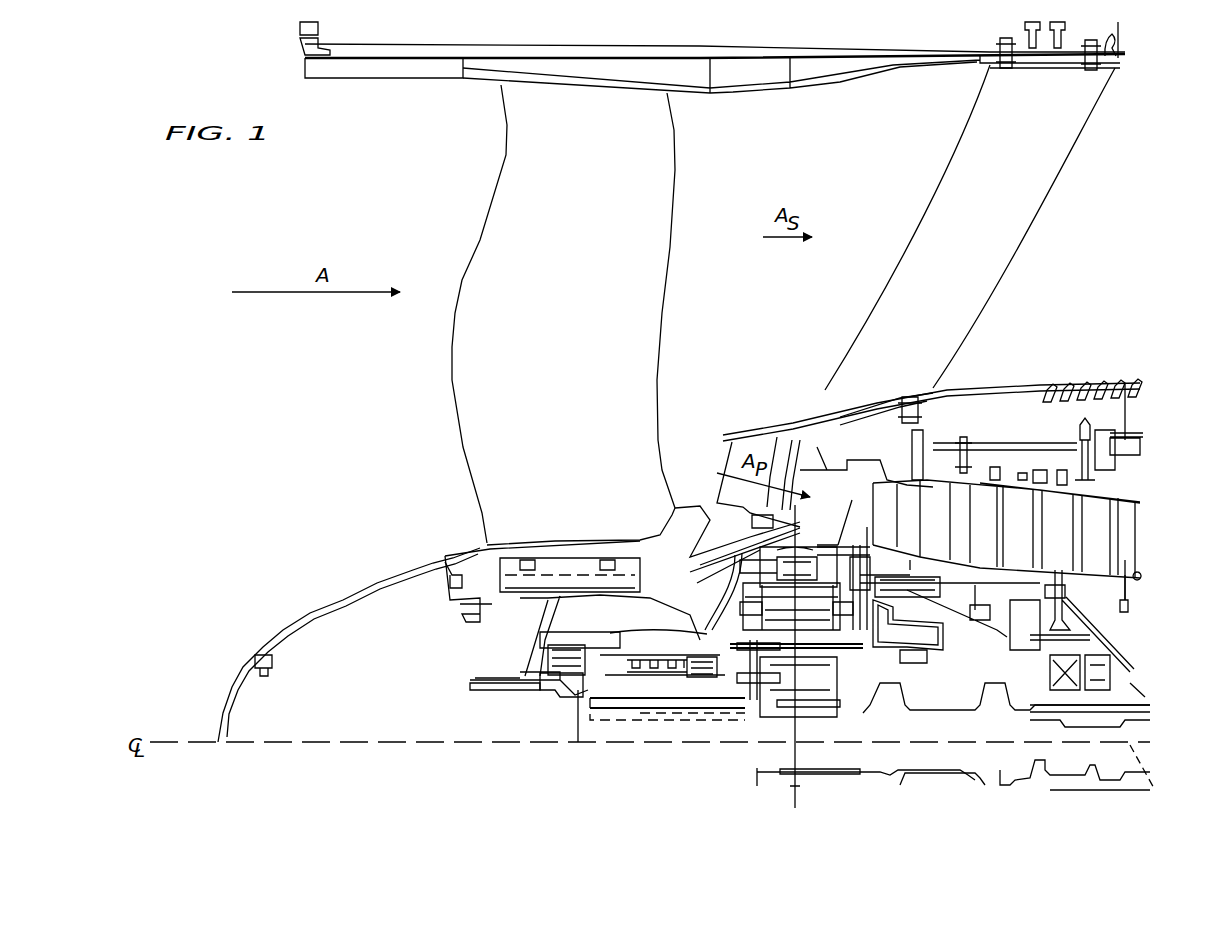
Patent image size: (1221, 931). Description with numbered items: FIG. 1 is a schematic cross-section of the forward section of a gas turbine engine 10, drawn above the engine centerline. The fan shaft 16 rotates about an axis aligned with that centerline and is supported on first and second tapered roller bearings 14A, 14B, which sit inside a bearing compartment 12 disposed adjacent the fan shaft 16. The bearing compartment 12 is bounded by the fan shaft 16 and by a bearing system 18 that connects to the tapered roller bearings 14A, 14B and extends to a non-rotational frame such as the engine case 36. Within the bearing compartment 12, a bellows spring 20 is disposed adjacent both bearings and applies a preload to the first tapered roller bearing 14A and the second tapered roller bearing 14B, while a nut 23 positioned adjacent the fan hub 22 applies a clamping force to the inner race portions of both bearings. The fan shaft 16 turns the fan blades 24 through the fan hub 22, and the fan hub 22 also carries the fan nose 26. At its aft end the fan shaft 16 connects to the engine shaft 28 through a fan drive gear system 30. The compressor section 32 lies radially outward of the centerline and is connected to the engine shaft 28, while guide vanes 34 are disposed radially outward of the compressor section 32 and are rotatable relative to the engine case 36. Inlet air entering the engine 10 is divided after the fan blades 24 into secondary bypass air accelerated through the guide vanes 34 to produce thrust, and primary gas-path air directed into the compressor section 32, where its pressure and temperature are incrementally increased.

The gas turbine engine 10 is at (1138, 206).
The bearing compartment 12 is at (700, 598).
The first tapered roller bearing 14A is at (600, 663).
The second tapered roller bearing 14B is at (702, 663).
The fan shaft 16 is at (737, 642).
The bearing system 18 is at (772, 596).
The bellows spring 20 is at (660, 662).
The fan hub 22 is at (523, 676).
The nut 23 is at (478, 678).
The fan blades 24 is at (466, 334).
The fan nose 26 is at (303, 614).
The engine shaft 28 is at (923, 713).
The fan drive gear system 30 is at (815, 690).
The compressor section 32 is at (1128, 535).
The guide vanes 34 is at (998, 242).
The engine case 36 is at (683, 53).